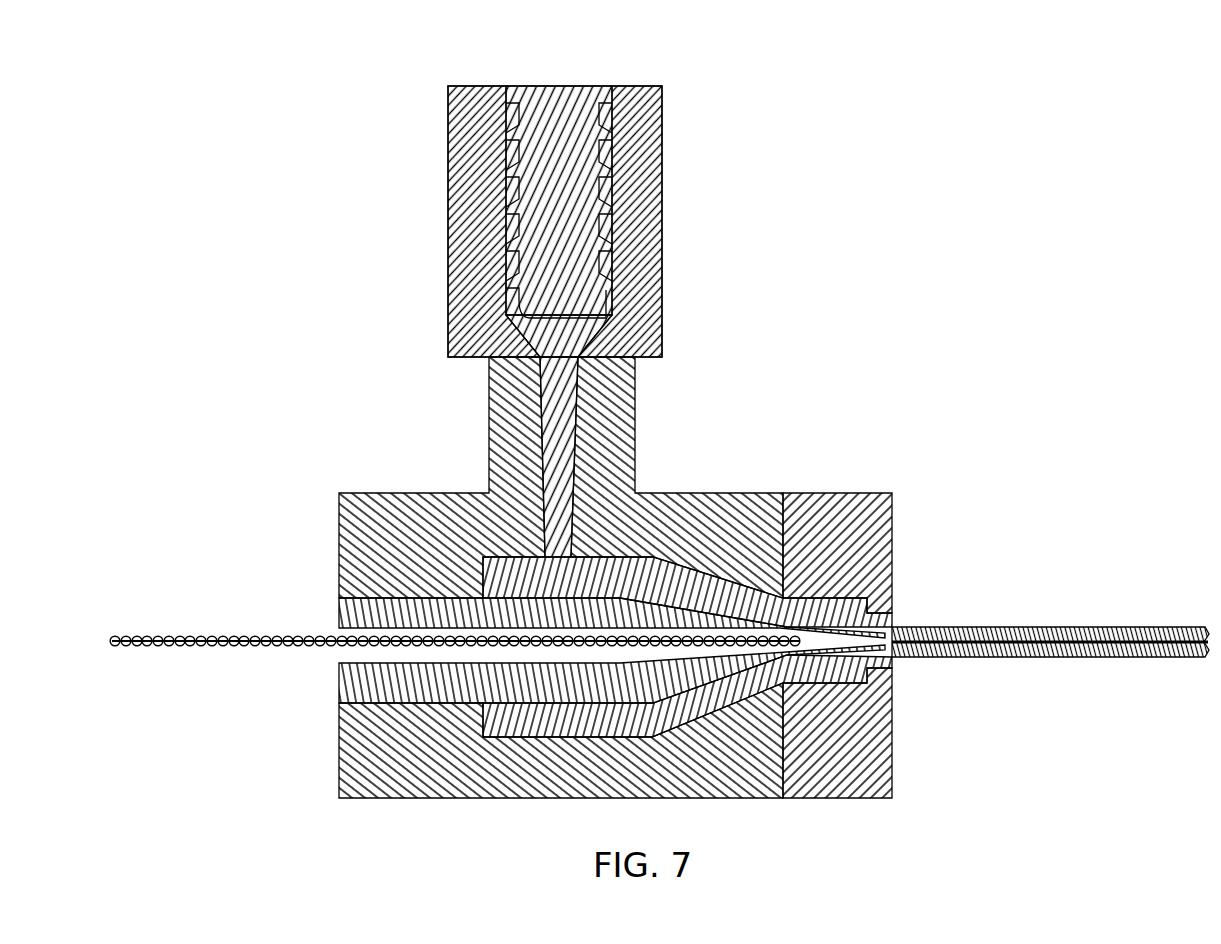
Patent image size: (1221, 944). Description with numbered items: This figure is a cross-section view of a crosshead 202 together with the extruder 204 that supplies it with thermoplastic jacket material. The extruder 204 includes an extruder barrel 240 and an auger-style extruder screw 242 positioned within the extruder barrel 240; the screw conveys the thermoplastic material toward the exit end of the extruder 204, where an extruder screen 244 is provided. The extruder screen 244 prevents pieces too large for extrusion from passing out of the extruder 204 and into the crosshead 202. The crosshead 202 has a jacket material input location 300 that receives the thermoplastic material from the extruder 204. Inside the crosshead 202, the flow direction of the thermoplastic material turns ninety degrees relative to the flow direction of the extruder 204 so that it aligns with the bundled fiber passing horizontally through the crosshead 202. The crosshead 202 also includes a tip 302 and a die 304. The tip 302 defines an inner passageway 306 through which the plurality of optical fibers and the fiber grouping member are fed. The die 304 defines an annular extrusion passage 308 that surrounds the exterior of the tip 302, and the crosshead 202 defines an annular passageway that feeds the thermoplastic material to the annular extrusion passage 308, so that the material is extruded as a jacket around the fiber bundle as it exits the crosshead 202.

The crosshead 202 is at (887, 438).
The extruder 204 is at (662, 212).
The extruder barrel 240 is at (630, 86).
The extruder screw 242 is at (548, 86).
The extruder screen 244 is at (558, 352).
The jacket material input location 300 is at (578, 400).
The tip 302 is at (339, 613).
The die 304 is at (885, 622).
The inner passageway 306 is at (890, 657).
The annular extrusion passage 308 is at (895, 641).